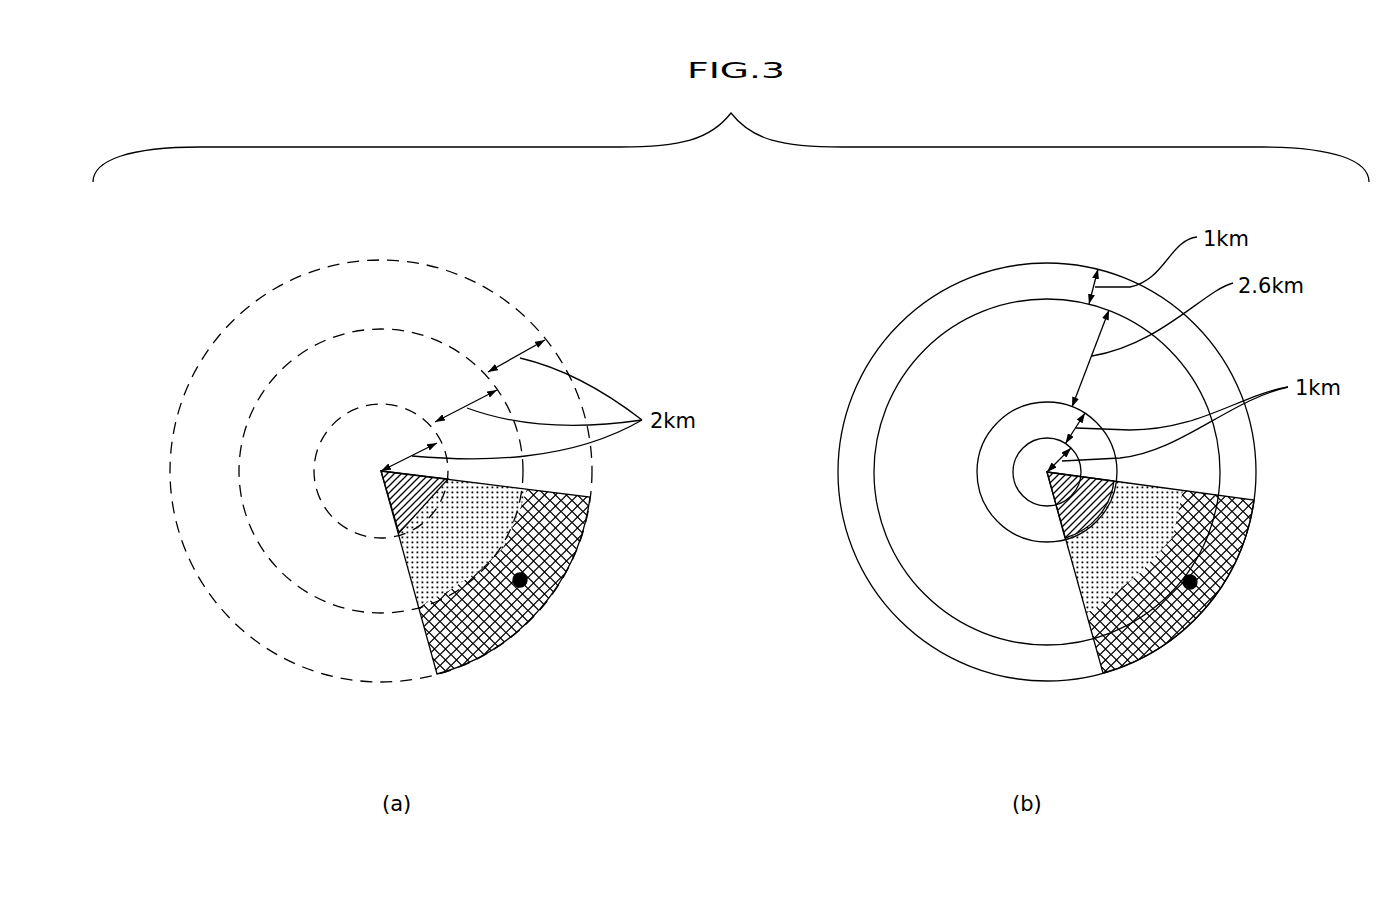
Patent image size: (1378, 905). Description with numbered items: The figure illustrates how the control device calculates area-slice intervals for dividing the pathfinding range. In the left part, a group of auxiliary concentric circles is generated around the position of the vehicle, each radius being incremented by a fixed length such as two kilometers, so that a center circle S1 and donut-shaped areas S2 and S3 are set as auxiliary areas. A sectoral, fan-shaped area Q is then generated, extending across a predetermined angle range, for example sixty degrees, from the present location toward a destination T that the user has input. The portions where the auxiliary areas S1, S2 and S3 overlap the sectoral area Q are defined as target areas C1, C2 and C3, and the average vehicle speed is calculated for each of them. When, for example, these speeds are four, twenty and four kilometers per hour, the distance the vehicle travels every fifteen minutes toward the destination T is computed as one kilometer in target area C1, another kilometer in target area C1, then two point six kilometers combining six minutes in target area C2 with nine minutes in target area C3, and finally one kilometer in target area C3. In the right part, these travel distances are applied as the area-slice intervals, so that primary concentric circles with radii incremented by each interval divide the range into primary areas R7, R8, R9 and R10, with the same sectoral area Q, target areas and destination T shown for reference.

The center circle S1 is at (340, 497).
The donut-shaped area S2 is at (287, 430).
The donut-shaped area S3 is at (237, 357).
The target area C1 is at (408, 492).
The target area C2 is at (465, 521).
The target area C3 is at (538, 558).
The destination T is at (522, 588).
The sectoral area Q is at (478, 658).
The primary area R7 is at (1038, 483).
The primary area R8 is at (1003, 452).
The primary area R9 is at (955, 402).
The primary area R10 is at (908, 345).